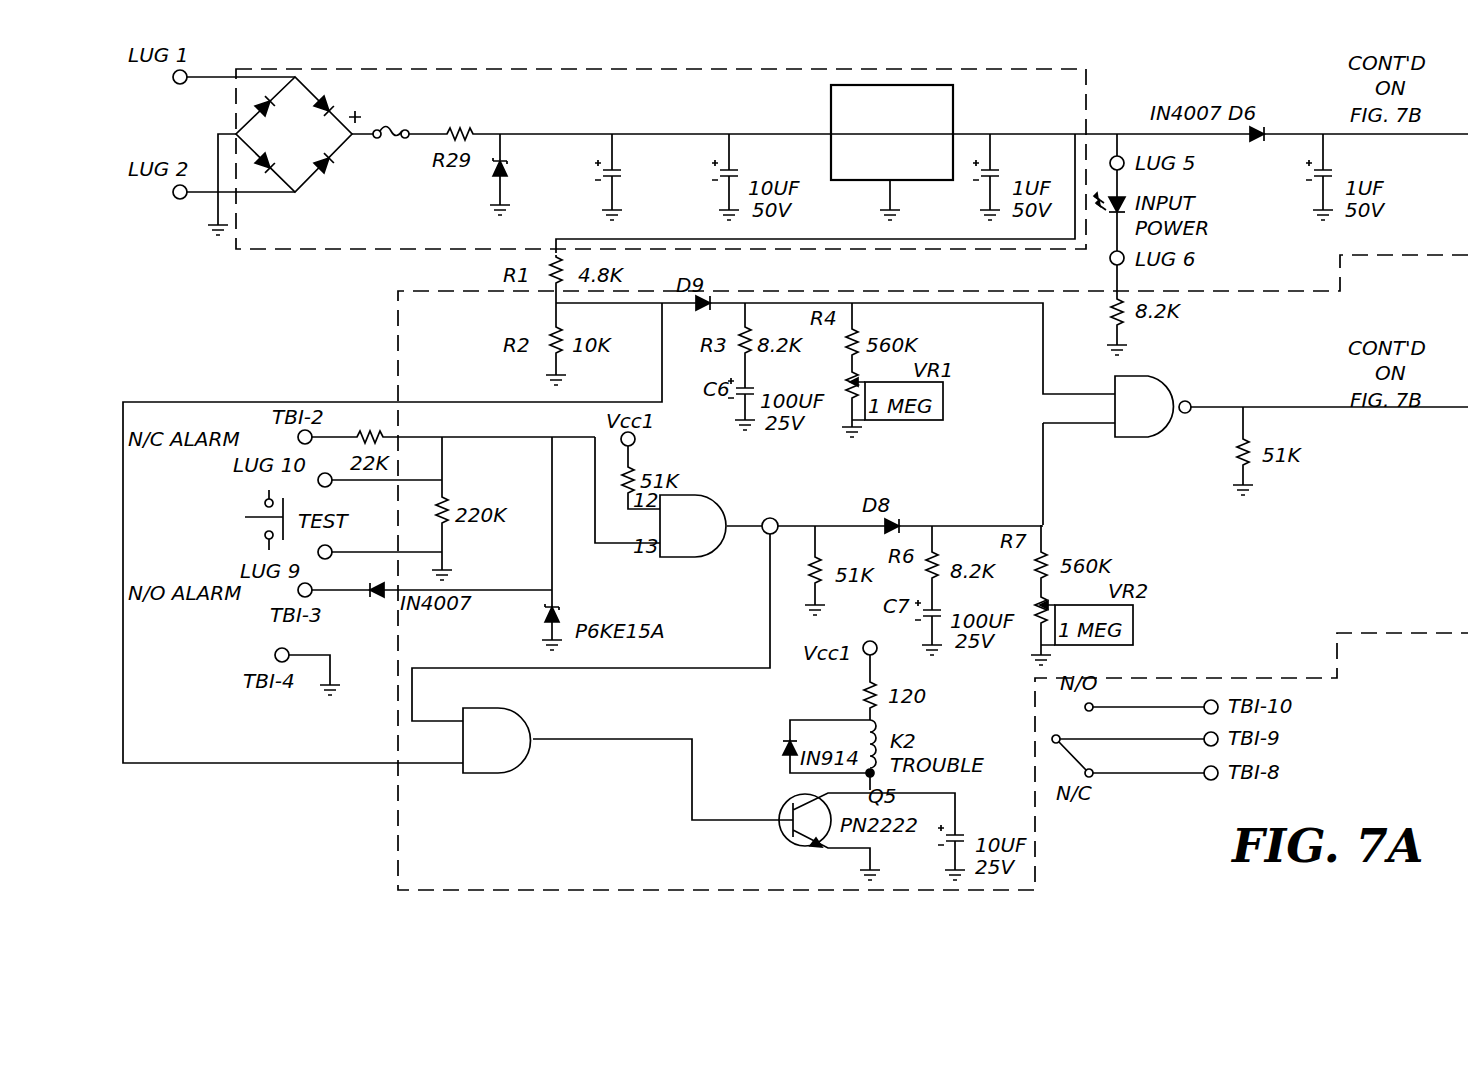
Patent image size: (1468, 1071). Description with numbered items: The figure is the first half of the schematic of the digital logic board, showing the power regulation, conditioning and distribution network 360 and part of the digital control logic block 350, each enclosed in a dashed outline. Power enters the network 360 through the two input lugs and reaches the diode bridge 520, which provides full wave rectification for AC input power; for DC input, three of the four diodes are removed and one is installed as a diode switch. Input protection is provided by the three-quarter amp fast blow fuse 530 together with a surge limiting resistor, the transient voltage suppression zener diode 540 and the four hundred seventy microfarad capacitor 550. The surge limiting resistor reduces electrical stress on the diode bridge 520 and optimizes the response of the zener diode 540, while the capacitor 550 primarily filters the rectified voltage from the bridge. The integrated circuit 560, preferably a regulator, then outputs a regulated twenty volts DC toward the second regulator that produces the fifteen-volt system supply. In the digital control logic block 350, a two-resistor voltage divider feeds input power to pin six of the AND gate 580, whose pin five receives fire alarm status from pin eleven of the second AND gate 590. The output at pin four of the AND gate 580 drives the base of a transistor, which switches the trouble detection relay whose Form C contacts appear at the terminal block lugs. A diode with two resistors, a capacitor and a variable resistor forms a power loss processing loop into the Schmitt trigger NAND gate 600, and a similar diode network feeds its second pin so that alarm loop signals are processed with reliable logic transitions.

The digital control logic block 350 is at (398, 832).
The power regulation, conditioning and distribution network 360 is at (350, 69).
The diode bridge 520 is at (335, 106).
The fuse 530 is at (408, 128).
The zener diode 540 is at (506, 176).
The capacitor 550 is at (614, 172).
The integrated circuit 560 is at (831, 108).
The AND gate 580 is at (488, 775).
The second AND gate 590 is at (705, 495).
The Schmitt trigger NAND gate 600 is at (1158, 377).